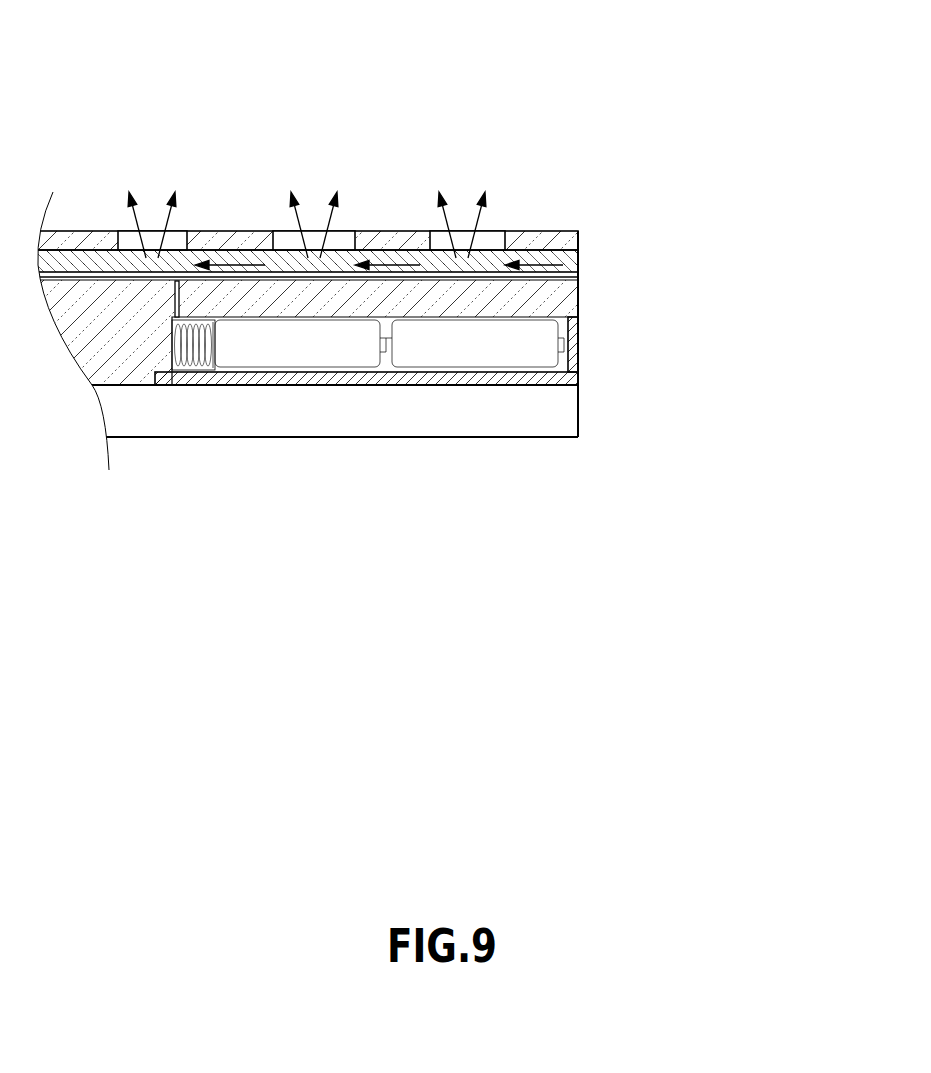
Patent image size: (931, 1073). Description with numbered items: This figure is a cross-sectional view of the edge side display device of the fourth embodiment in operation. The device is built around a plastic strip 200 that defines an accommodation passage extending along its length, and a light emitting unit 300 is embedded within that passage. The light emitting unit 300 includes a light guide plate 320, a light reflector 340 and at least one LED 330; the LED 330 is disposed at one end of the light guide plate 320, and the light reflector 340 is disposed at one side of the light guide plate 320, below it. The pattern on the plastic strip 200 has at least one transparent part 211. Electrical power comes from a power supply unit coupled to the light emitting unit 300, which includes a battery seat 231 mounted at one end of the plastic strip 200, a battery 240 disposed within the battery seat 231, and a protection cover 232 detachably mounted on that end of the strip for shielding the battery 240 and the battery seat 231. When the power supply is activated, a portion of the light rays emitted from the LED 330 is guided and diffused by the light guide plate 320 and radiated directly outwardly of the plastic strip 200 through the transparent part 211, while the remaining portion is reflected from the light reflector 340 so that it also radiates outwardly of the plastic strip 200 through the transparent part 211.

The plastic strip 200 is at (722, 118).
The transparent part 211 is at (118, 237).
The light emitting unit 300 is at (413, 227).
The LED 330 is at (366, 163).
The light guide plate 320 is at (578, 262).
The light reflector 340 is at (364, 331).
The battery 240 is at (277, 345).
The protection cover 232 is at (393, 385).
The battery seat 231 is at (566, 370).